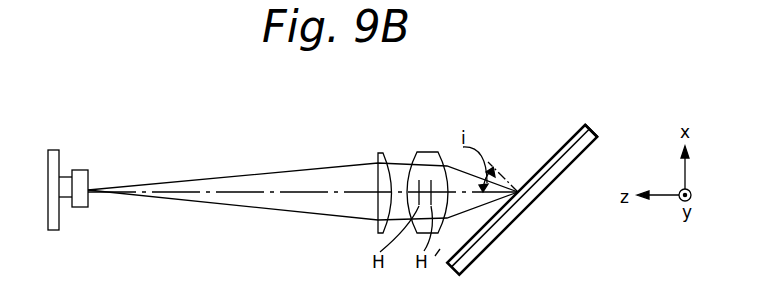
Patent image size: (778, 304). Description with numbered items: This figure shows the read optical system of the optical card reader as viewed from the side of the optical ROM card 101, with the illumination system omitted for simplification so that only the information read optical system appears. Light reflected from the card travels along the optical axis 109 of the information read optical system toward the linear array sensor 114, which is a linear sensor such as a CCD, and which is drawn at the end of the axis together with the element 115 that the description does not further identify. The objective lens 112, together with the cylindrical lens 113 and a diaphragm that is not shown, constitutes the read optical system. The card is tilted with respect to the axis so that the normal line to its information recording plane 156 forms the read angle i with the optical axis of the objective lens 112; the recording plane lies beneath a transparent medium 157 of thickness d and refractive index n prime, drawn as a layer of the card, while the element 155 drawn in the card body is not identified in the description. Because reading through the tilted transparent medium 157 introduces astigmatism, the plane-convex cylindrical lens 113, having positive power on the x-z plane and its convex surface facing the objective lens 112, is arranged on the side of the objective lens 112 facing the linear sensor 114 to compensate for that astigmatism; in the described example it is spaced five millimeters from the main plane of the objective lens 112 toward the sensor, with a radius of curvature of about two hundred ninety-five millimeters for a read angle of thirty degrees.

The optical ROM card 101 is at (544, 182).
The optical axis of information read optical system 109 is at (294, 192).
The objective lens 112 is at (430, 152).
The cylindrical lens 113 is at (381, 153).
The linear array sensor 114 is at (83, 170).
The laser mount / heat sink 115 is at (55, 150).
The transparent substrate 155 is at (565, 157).
The information recording plane 156 is at (592, 133).
The transparent medium 157 is at (568, 142).